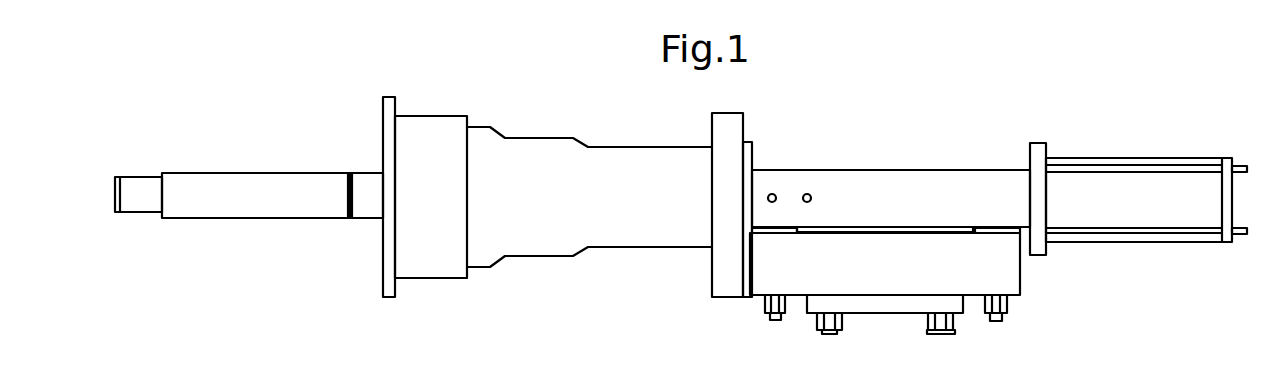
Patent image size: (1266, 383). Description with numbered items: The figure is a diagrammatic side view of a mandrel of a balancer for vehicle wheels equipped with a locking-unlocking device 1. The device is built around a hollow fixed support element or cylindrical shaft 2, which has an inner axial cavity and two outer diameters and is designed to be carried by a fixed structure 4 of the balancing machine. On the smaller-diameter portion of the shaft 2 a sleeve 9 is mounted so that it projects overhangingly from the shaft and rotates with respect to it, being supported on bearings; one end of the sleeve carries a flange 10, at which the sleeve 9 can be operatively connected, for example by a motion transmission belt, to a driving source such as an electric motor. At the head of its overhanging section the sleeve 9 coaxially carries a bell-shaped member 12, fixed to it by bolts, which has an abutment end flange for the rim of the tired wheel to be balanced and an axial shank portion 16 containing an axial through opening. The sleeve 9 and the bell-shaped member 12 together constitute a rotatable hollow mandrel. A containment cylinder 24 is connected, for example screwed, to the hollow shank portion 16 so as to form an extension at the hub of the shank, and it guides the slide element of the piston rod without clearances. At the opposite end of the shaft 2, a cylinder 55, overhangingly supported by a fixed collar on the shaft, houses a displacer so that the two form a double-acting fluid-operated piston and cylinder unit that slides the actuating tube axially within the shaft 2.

The locking-unlocking device 1 is at (858, 138).
The cylindrical shaft 2 is at (930, 180).
The fixed structure 4 is at (1020, 280).
The sleeve 9 is at (540, 142).
The flange 10 is at (735, 133).
The bell-shaped member 12 is at (433, 115).
The shank portion 16 is at (363, 213).
The containment cylinder 24 is at (233, 173).
The cylinder 55 is at (1117, 158).